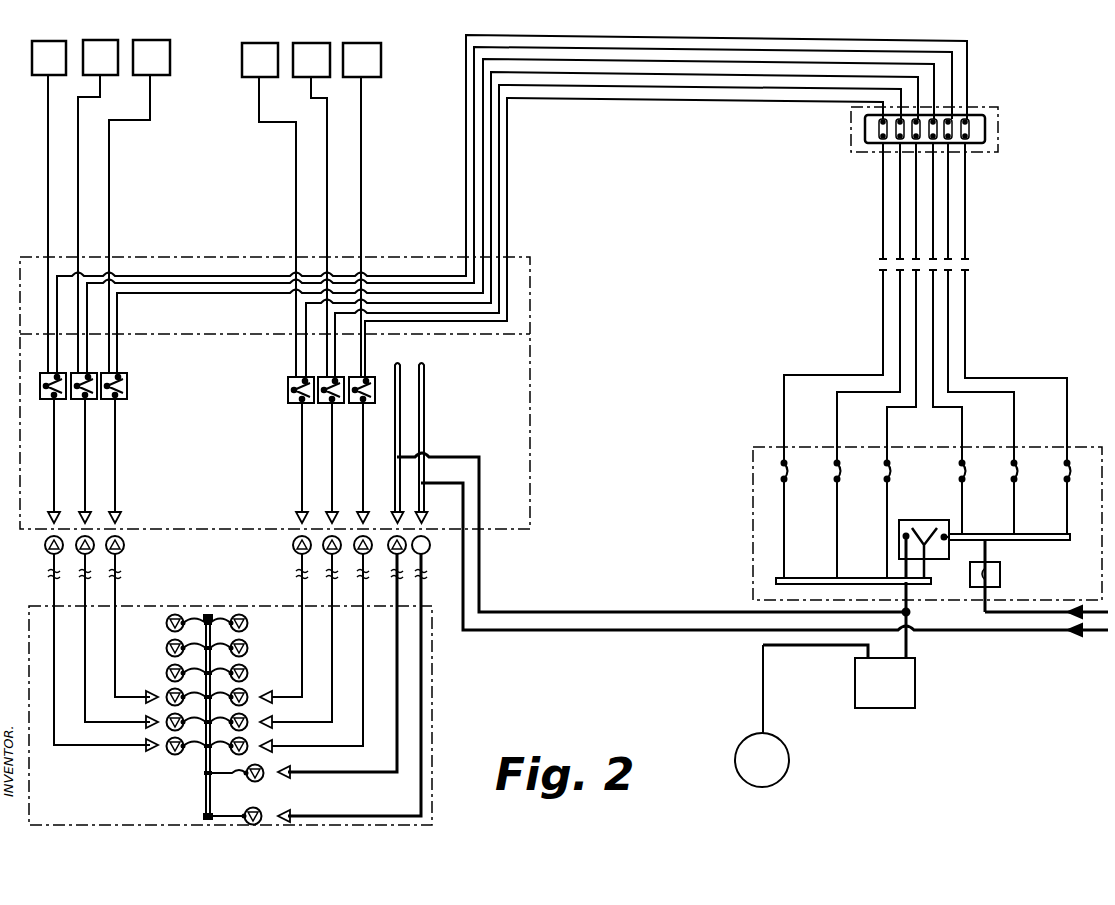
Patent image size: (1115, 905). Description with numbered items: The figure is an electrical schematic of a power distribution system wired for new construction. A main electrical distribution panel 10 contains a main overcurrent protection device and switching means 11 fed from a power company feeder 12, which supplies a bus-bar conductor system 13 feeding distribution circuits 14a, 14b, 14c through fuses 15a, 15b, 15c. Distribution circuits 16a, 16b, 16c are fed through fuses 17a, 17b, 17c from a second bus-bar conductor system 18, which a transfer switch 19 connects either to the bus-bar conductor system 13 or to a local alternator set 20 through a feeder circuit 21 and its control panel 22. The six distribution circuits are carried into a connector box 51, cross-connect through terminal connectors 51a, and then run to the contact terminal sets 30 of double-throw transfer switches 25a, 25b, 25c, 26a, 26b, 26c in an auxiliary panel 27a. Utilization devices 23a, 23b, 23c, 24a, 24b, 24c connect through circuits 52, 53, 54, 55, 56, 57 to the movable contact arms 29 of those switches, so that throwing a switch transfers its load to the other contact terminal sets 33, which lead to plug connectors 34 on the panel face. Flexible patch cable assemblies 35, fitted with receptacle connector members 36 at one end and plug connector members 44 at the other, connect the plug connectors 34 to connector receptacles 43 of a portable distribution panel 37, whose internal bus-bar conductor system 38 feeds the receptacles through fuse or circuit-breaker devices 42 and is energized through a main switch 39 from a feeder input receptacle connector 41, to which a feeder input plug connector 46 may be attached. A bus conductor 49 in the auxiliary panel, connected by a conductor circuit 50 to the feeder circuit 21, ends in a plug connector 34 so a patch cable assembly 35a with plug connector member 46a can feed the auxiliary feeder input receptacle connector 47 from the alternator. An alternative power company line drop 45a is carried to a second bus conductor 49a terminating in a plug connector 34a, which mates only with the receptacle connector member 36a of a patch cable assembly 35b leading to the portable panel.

The main electrical distribution panel 10 is at (928, 513).
The main overcurrent protection device and switching means 11 is at (1000, 572).
The power company feeder 12 is at (1010, 615).
The bus-bar conductor system 13 is at (1020, 536).
The distribution circuit 14a is at (933, 323).
The distribution circuit 14b is at (948, 296).
The distribution circuit 14c is at (965, 252).
The fuse 15a is at (966, 471).
The fuse 15b is at (1018, 471).
The fuse 15c is at (1071, 473).
The distribution circuit 16a is at (883, 240).
The distribution circuit 16b is at (900, 210).
The distribution circuit 16c is at (916, 182).
The fuse 17a is at (788, 471).
The fuse 17b is at (841, 471).
The fuse 17c is at (891, 471).
The second bus-bar conductor system 18 is at (875, 578).
The transfer switch 19 is at (940, 520).
The local alternator set 20 is at (777, 771).
The feeder circuit 21 is at (907, 642).
The control panel 22 is at (901, 702).
The utilization device 23a is at (151, 47).
The utilization device 23b is at (100, 47).
The utilization device 23c is at (49, 47).
The utilization device 24a is at (363, 48).
The utilization device 24b is at (311, 48).
The utilization device 24c is at (260, 48).
The double-throw transfer switch 25a is at (127, 396).
The double-throw transfer switch 25b is at (78, 402).
The double-throw transfer switch 25c is at (44, 402).
The double-throw transfer switch 26a is at (366, 377).
The double-throw transfer switch 26b is at (322, 405).
The double-throw transfer switch 26c is at (290, 405).
The auxiliary panel 27a is at (530, 408).
The movable contact arm 29 is at (131, 386).
The contact terminal set 30 is at (118, 373).
The contact terminal set 33 is at (58, 398).
The plug connector 34 is at (113, 512).
The plug connector 34a is at (430, 520).
The flexible patch cable assembly 35 is at (54, 658).
The patch cable assembly 35a is at (397, 688).
The patch cable assembly 35b is at (421, 674).
The receptacle connector member 36 is at (58, 552).
The receptacle connector member 36a is at (430, 549).
The portable distribution panel 37 is at (432, 704).
The internal bus-bar conductor system 38 is at (249, 655).
The main switch 39 is at (236, 800).
The feeder input receptacle connector 41 is at (258, 806).
The fuse or circuit-breaker device 42 is at (190, 755).
The connector receptacle 43 is at (166, 670).
The plug connector member 44 is at (148, 722).
The alternative power company line drop 45a is at (672, 631).
The feeder input plug connector 46 is at (280, 806).
The plug connector member 46a is at (288, 768).
The auxiliary feeder input receptacle connector 47 is at (264, 775).
The bus conductor 49 is at (395, 435).
The second bus conductor 49a is at (425, 438).
The conductor circuit 50 is at (640, 612).
The connector box 51 is at (998, 129).
The terminal connector 51a is at (879, 133).
The circuit 52 is at (109, 192).
The circuit 53 is at (78, 176).
The circuit 54 is at (48, 183).
The circuit 55 is at (361, 175).
The circuit 56 is at (327, 189).
The circuit 57 is at (296, 191).